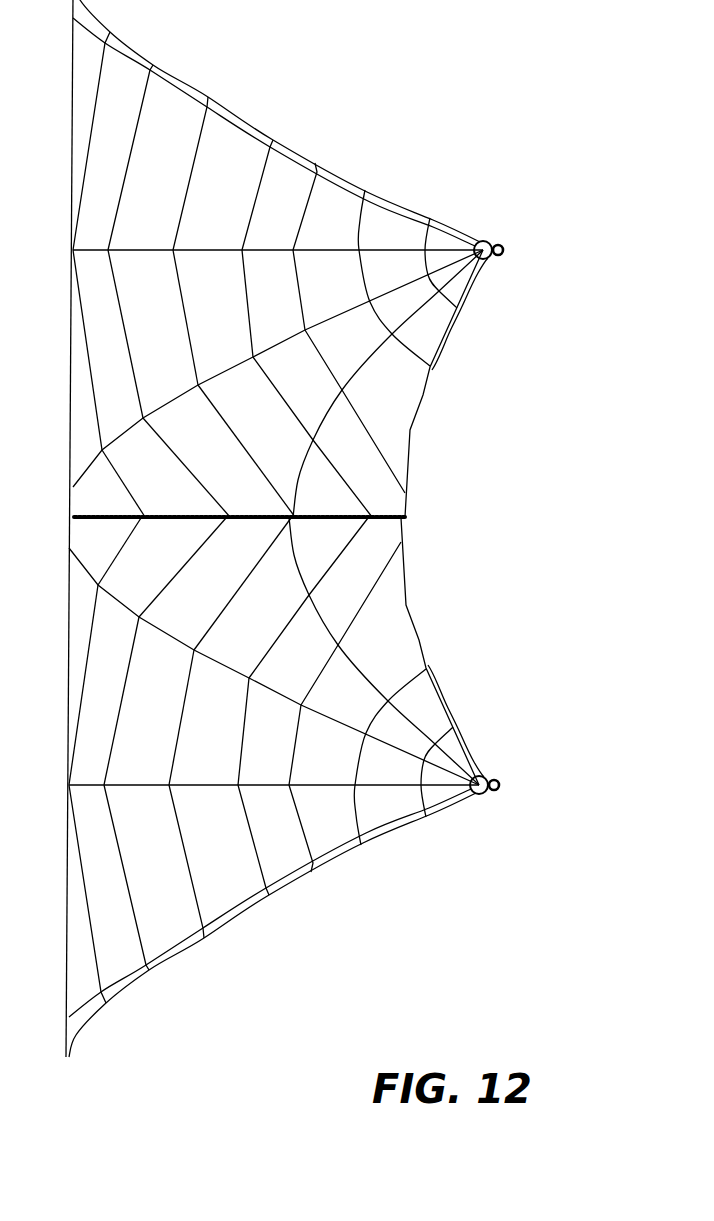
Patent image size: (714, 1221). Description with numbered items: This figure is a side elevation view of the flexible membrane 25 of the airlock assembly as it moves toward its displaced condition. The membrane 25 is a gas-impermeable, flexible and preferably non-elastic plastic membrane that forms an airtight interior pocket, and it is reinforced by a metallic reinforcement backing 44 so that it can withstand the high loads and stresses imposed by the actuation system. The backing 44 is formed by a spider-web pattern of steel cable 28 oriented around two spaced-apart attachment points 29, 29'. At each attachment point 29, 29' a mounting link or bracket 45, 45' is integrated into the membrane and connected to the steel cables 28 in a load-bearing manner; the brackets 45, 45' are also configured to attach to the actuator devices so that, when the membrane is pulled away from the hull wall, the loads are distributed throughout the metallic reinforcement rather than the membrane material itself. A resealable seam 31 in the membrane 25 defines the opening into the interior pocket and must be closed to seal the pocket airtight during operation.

The flexible membrane 25 is at (370, 155).
The steel cable 28 is at (396, 688).
The attachment point 29 is at (511, 821).
The attachment point 29' is at (488, 200).
The resealable seam 31 is at (378, 516).
The metallic reinforcement backing 44 is at (286, 889).
The mounting bracket 45 is at (534, 763).
The mounting bracket 45' is at (544, 228).